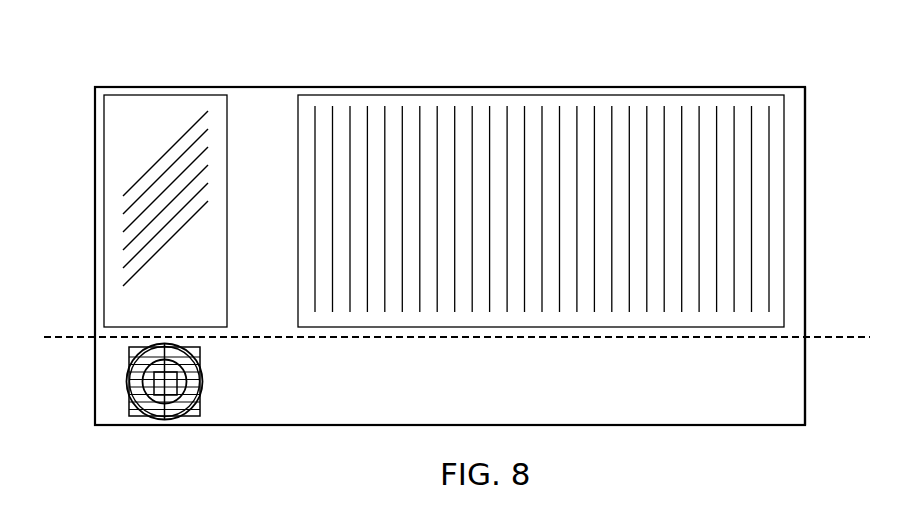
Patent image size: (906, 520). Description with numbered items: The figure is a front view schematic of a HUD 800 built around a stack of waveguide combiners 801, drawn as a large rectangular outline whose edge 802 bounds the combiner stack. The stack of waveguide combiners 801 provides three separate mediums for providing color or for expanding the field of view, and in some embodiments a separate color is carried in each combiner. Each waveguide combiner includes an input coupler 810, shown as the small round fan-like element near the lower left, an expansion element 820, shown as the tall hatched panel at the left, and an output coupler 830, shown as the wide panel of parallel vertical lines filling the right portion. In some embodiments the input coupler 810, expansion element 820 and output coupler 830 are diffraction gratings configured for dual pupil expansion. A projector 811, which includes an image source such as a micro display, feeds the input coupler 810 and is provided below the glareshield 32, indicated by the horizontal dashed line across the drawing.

The HUD 800 is at (474, 62).
The stack of waveguide combiners 801 is at (777, 92).
The housing side wall 802 is at (795, 261).
The expansion element 820 is at (116, 229).
The output coupler 830 is at (326, 107).
The glareshield 32 is at (832, 337).
The input coupler 810 is at (142, 417).
The projector 811 is at (160, 417).